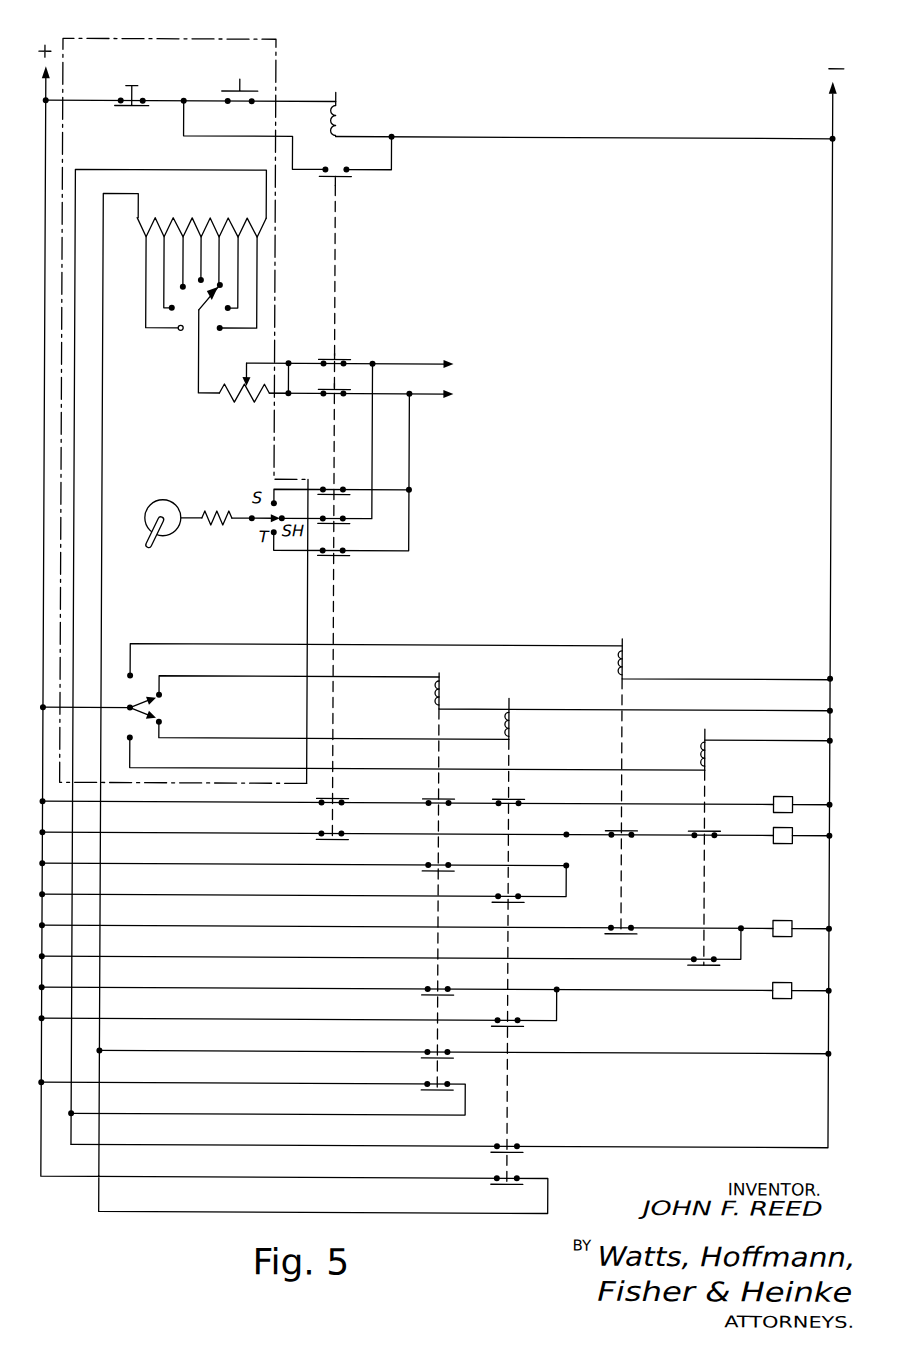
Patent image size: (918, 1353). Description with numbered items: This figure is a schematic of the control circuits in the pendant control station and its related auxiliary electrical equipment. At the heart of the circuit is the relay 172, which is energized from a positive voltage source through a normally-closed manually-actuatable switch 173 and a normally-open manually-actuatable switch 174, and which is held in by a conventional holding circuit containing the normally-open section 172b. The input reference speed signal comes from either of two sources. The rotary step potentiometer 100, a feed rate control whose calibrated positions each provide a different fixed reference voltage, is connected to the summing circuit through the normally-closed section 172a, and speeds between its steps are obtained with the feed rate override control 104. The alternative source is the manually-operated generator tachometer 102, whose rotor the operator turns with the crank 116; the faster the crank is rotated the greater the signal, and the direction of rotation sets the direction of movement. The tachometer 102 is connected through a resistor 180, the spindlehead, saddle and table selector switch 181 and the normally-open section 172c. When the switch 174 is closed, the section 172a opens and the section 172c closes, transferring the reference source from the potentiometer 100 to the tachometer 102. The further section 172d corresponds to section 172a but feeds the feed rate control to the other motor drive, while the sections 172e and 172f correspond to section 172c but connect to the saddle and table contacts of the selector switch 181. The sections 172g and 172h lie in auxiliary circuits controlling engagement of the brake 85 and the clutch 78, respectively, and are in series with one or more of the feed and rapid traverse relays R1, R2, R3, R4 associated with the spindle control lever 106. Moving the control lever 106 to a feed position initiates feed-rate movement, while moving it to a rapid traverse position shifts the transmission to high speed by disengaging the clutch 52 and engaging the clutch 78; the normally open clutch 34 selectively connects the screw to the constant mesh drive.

The normally-closed manually-actuatable switch 173 is at (131, 86).
The normally-open manually-actuatable switch 174 is at (237, 80).
The relay 172 is at (338, 120).
The normally-closed relay section 172a is at (340, 357).
The normally-open relay section 172b is at (340, 178).
The normally-open relay section 172c is at (327, 485).
The relay section 172d is at (327, 398).
The relay section 172e is at (343, 524).
The relay section 172f is at (340, 558).
The relay section 172g is at (337, 800).
The relay section 172h is at (340, 840).
The rotary step potentiometer 100 is at (190, 342).
The feed rate override control 104 is at (243, 403).
The manually-operated generator tachometer 102 is at (176, 500).
The crank 116 is at (150, 549).
The resistor 180 is at (217, 510).
The spindlehead, saddle and table selector switch 181 is at (252, 521).
The control lever 106 is at (136, 712).
The feed and rapid traverse relay R1 is at (445, 690).
The feed and rapid traverse relay R2 is at (514, 726).
The feed and rapid traverse relay R3 is at (626, 660).
The feed and rapid traverse relay R4 is at (700, 750).
The brake 85 is at (789, 795).
The clutch 78 is at (788, 843).
The clutch 52 is at (788, 918).
The clutch 34 is at (788, 980).